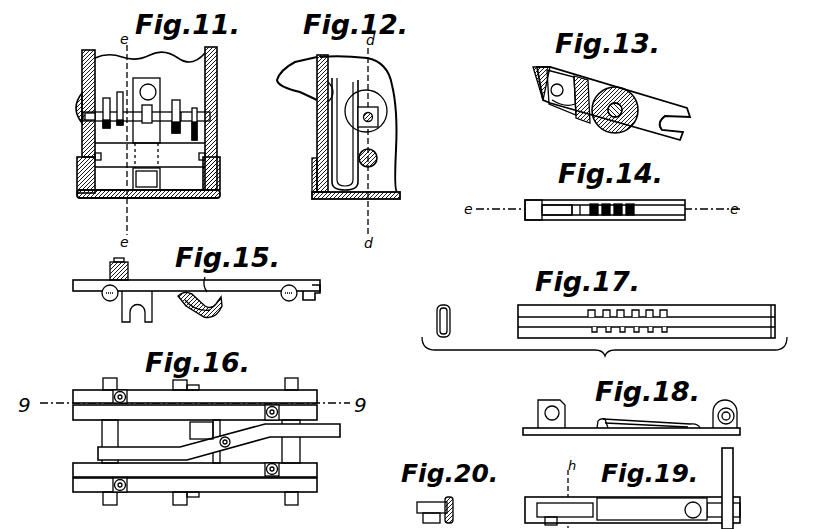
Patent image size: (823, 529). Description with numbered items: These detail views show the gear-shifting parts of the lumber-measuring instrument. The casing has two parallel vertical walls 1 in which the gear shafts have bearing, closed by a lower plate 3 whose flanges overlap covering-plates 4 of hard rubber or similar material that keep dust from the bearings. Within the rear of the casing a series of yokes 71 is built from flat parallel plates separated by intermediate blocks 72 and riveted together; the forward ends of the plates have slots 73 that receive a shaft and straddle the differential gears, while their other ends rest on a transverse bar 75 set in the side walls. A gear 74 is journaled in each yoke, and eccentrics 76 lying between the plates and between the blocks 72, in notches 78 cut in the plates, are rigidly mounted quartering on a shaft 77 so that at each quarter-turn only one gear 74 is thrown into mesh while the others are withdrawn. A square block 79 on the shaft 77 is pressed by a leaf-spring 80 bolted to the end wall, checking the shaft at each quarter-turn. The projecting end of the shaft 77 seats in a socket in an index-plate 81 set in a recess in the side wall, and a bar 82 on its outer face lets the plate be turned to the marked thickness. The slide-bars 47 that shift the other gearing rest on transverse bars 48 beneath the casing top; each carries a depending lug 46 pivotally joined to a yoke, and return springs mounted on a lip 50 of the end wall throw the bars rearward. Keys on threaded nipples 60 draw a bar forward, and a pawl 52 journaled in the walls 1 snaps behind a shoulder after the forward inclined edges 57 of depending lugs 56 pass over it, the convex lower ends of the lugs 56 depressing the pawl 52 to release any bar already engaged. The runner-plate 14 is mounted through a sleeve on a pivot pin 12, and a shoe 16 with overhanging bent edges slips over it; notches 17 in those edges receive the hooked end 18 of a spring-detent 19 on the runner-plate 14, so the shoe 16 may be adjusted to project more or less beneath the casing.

In FIG. 11, the parallel vertical walls 1 is at (203, 65).
In FIG. 11, the lower plate 3 is at (148, 203).
In FIG. 12, the lower plate 3 is at (356, 205).
In FIG. 11, the covering-plates 4 is at (214, 67).
In FIG. 19, the pivot pin 12 is at (734, 474).
In FIG. 18, the runner-plate 14 is at (631, 425).
In FIG. 19, the runner-plate 14 is at (632, 503).
In FIG. 20, the runner-plate 14 is at (444, 510).
In FIG. 17, the shoe 16 is at (606, 313).
In FIG. 17, the notches 17 is at (657, 312).
In FIG. 18, the hooked end 18 is at (594, 419).
In FIG. 18, the spring-detent 19 is at (651, 419).
In FIG. 19, the spring-detent 19 is at (652, 509).
In FIG. 15, the lug 46 is at (123, 318).
In FIG. 15, the slide-bars 47 is at (196, 296).
In FIG. 16, the slide-bars 47 is at (206, 484).
In FIG. 15, the transverse bars 48 is at (102, 298).
In FIG. 15, the lip 50 is at (183, 304).
In FIG. 15, the pawl 52 is at (200, 313).
In FIG. 16, the pawl 52 is at (183, 430).
In FIG. 15, the depending lugs 56 is at (193, 281).
In FIG. 16, the forward inclined edges 57 is at (78, 410).
In FIG. 15, the threaded nipples 60 is at (111, 267).
In FIG. 16, the threaded nipples 60 is at (274, 406).
In FIG. 13, the yokes 71 is at (613, 103).
In FIG. 14, the yokes 71 is at (605, 203).
In FIG. 13, the intermediate blocks 72 is at (542, 85).
In FIG. 14, the intermediate blocks 72 is at (524, 206).
In FIG. 13, the slots 73 is at (684, 128).
In FIG. 13, the gear 74 is at (627, 106).
In FIG. 14, the gear 74 is at (631, 216).
In FIG. 11, the transverse bar 75 is at (150, 155).
In FIG. 12, the transverse bar 75 is at (378, 158).
In FIG. 11, the eccentrics 76 is at (108, 99).
In FIG. 12, the eccentrics 76 is at (366, 105).
In FIG. 11, the shaft 77 is at (180, 106).
In FIG. 12, the shaft 77 is at (373, 115).
In FIG. 13, the notches 78 is at (566, 87).
In FIG. 14, the notches 78 is at (556, 219).
In FIG. 11, the square block 79 is at (146, 106).
In FIG. 12, the square block 79 is at (378, 123).
In FIG. 11, the leaf-spring 80 is at (146, 166).
In FIG. 12, the leaf-spring 80 is at (345, 134).
In FIG. 11, the index-plate 81 is at (80, 97).
In FIG. 11, the bar 82 is at (86, 112).